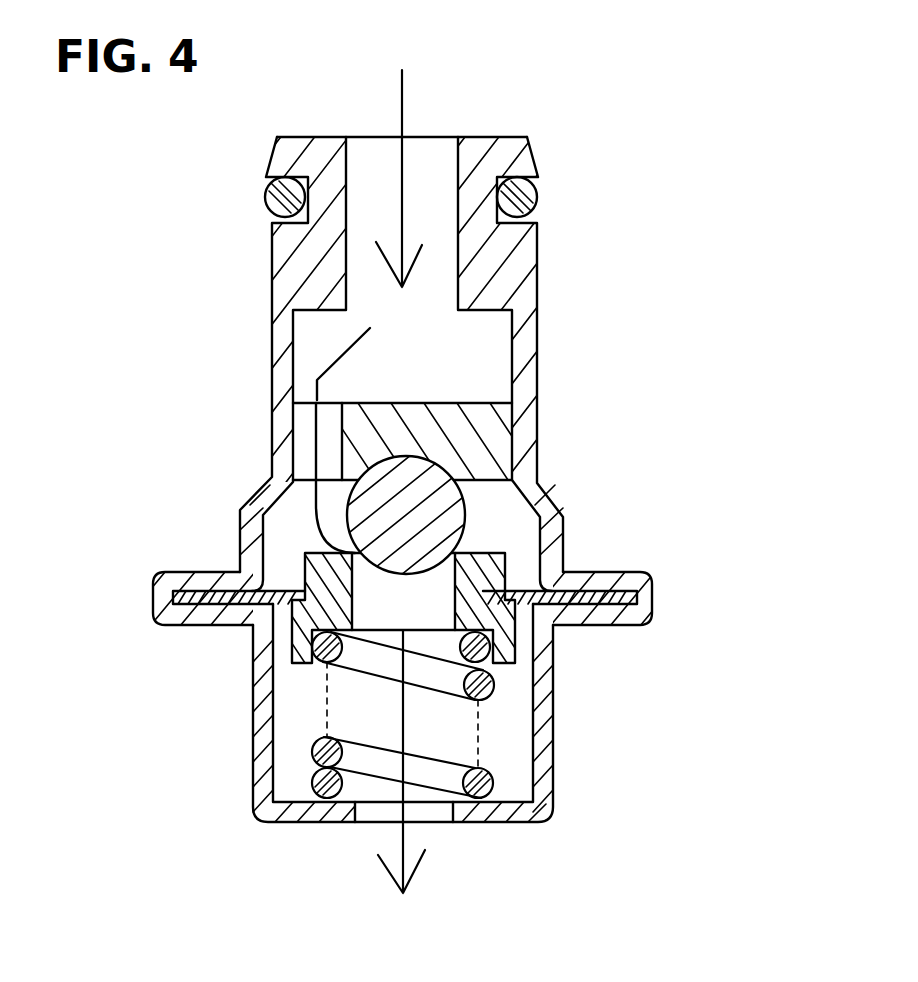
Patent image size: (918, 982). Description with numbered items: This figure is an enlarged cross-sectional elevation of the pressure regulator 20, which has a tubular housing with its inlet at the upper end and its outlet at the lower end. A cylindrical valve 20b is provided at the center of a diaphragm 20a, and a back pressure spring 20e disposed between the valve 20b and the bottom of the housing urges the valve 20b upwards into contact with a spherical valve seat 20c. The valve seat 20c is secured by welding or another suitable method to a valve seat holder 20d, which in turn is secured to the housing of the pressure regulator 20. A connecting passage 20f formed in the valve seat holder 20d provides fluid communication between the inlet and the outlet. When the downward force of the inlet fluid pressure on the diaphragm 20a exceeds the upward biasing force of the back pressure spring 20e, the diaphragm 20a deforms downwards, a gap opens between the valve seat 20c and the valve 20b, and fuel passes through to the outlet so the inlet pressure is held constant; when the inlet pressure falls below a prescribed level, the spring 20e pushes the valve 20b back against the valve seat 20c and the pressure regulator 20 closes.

The pressure regulator 20 is at (538, 302).
The diaphragm 20a is at (530, 572).
The cylindrical valve 20b is at (305, 560).
The spherical valve seat 20c is at (465, 525).
The valve seat holder 20d is at (478, 438).
The back pressure spring 20e is at (303, 753).
The connecting passage 20f is at (312, 420).